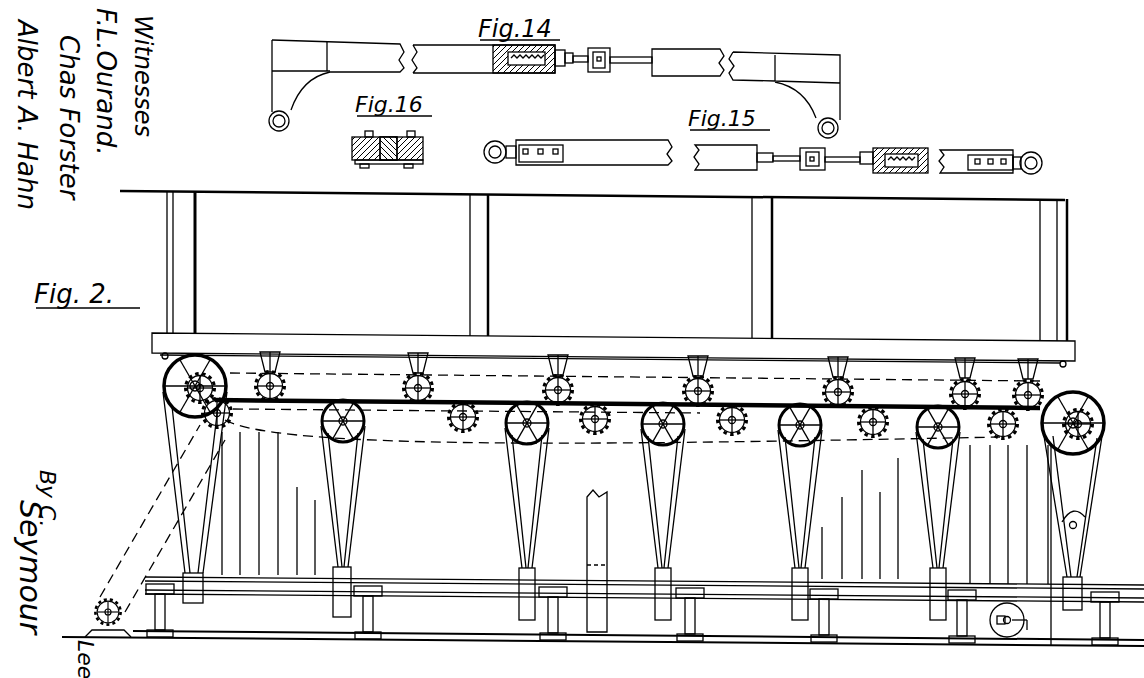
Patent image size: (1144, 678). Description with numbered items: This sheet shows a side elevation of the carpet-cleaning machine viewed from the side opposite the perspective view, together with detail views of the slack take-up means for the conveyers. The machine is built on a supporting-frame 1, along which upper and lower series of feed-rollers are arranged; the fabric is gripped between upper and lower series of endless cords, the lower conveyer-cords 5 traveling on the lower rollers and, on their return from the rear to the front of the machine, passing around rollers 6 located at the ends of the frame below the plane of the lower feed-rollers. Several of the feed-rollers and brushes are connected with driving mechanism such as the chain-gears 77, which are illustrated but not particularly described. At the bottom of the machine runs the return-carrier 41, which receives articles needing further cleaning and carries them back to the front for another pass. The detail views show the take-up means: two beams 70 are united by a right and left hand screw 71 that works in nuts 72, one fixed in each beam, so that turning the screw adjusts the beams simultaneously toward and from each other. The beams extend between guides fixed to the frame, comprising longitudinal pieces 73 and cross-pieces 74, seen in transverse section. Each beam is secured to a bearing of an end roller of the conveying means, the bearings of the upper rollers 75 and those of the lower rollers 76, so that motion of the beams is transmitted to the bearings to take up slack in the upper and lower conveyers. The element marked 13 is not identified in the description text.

In FIG. 2, the supporting-frame 1 is at (632, 418).
In FIG. 2, the lower conveyer-cords 5 is at (388, 370).
In FIG. 2, the rollers 6 is at (1078, 513).
In FIG. 2, the drive pulley 13 is at (1003, 633).
In FIG. 2, the return-carrier 41 is at (283, 634).
In FIG. 14, the beams 70 is at (402, 43).
In FIG. 16, the beams 70 is at (400, 129).
In FIG. 15, the beams 70 is at (975, 143).
In FIG. 14, the right and left hand screw 71 is at (575, 56).
In FIG. 15, the right and left hand screw 71 is at (788, 143).
In FIG. 14, the nuts 72 is at (600, 72).
In FIG. 15, the nuts 72 is at (812, 170).
In FIG. 16, the longitudinal pieces 73 is at (352, 151).
In FIG. 16, the cross-pieces 74 is at (389, 172).
In FIG. 14, the bearings of the upper rollers 75 is at (268, 121).
In FIG. 15, the bearings of the lower rollers 76 is at (769, 158).
In FIG. 2, the chain-gears 77 is at (602, 487).